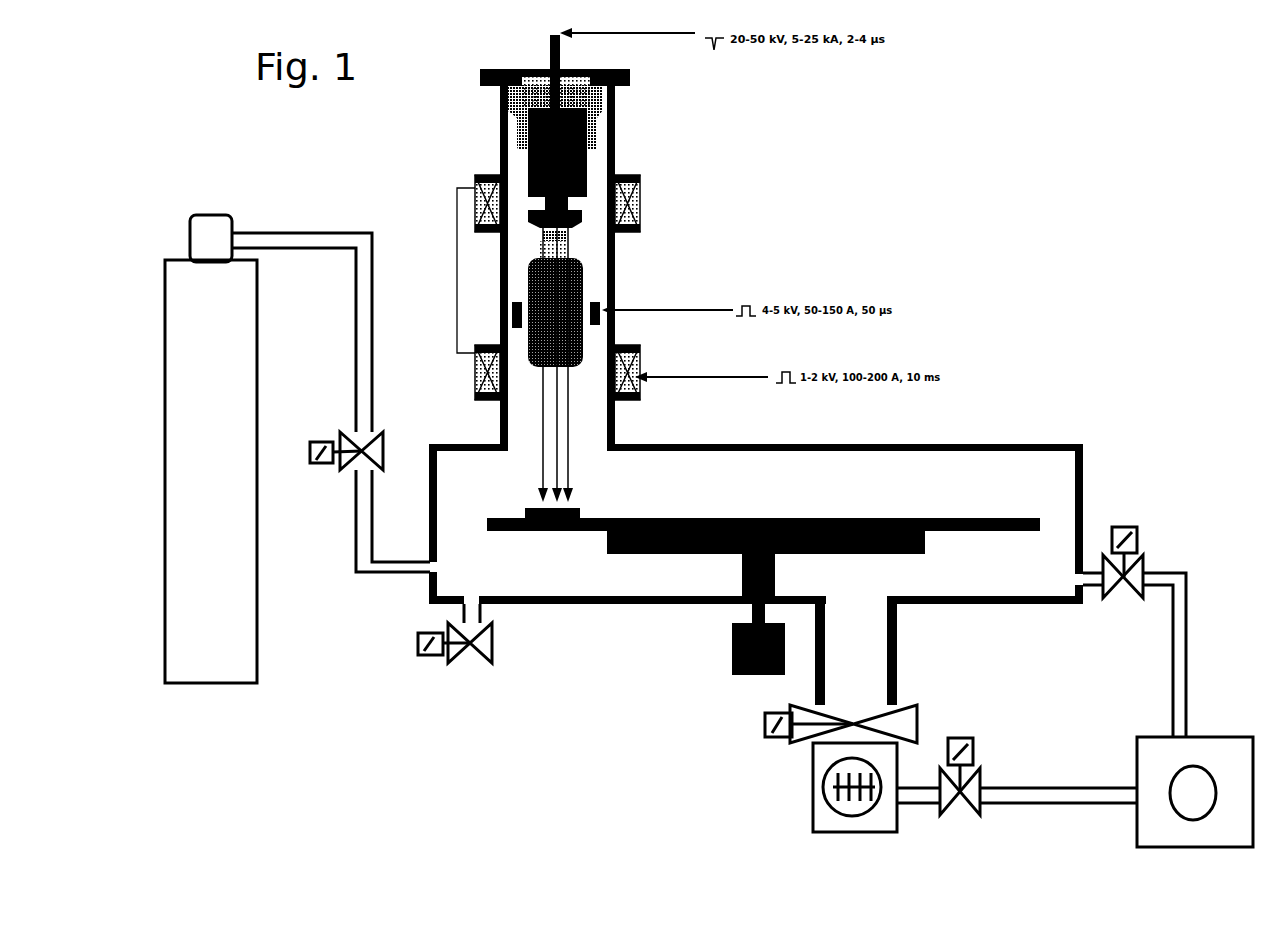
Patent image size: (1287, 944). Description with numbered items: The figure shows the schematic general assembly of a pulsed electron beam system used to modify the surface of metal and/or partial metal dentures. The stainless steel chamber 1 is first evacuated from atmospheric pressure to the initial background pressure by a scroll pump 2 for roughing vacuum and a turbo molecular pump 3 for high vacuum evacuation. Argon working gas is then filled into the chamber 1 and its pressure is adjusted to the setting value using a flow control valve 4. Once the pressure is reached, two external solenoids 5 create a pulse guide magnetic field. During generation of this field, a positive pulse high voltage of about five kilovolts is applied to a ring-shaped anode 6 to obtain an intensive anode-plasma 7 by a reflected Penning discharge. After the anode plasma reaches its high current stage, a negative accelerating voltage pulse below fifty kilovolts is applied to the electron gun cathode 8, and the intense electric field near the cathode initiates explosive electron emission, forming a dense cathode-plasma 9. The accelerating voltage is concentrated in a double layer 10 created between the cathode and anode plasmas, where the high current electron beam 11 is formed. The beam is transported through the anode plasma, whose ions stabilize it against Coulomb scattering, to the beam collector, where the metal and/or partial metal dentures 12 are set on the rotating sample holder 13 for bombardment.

The chamber 1 is at (1083, 463).
The scroll pump 2 is at (1165, 822).
The turbo molecular pump 3 is at (813, 800).
The flow control valve 4 is at (345, 478).
The external solenoids 5 is at (475, 343).
The ring-shaped anode 6 is at (603, 318).
The anode-plasma 7 is at (583, 287).
The electron gun cathode 8 is at (560, 243).
The cathode-plasma 9 is at (585, 218).
The double layer 10 is at (568, 251).
The electron beam 11 is at (583, 448).
The metal and/or partial metal dentures 12 is at (583, 510).
The rotating sample holder 13 is at (748, 531).